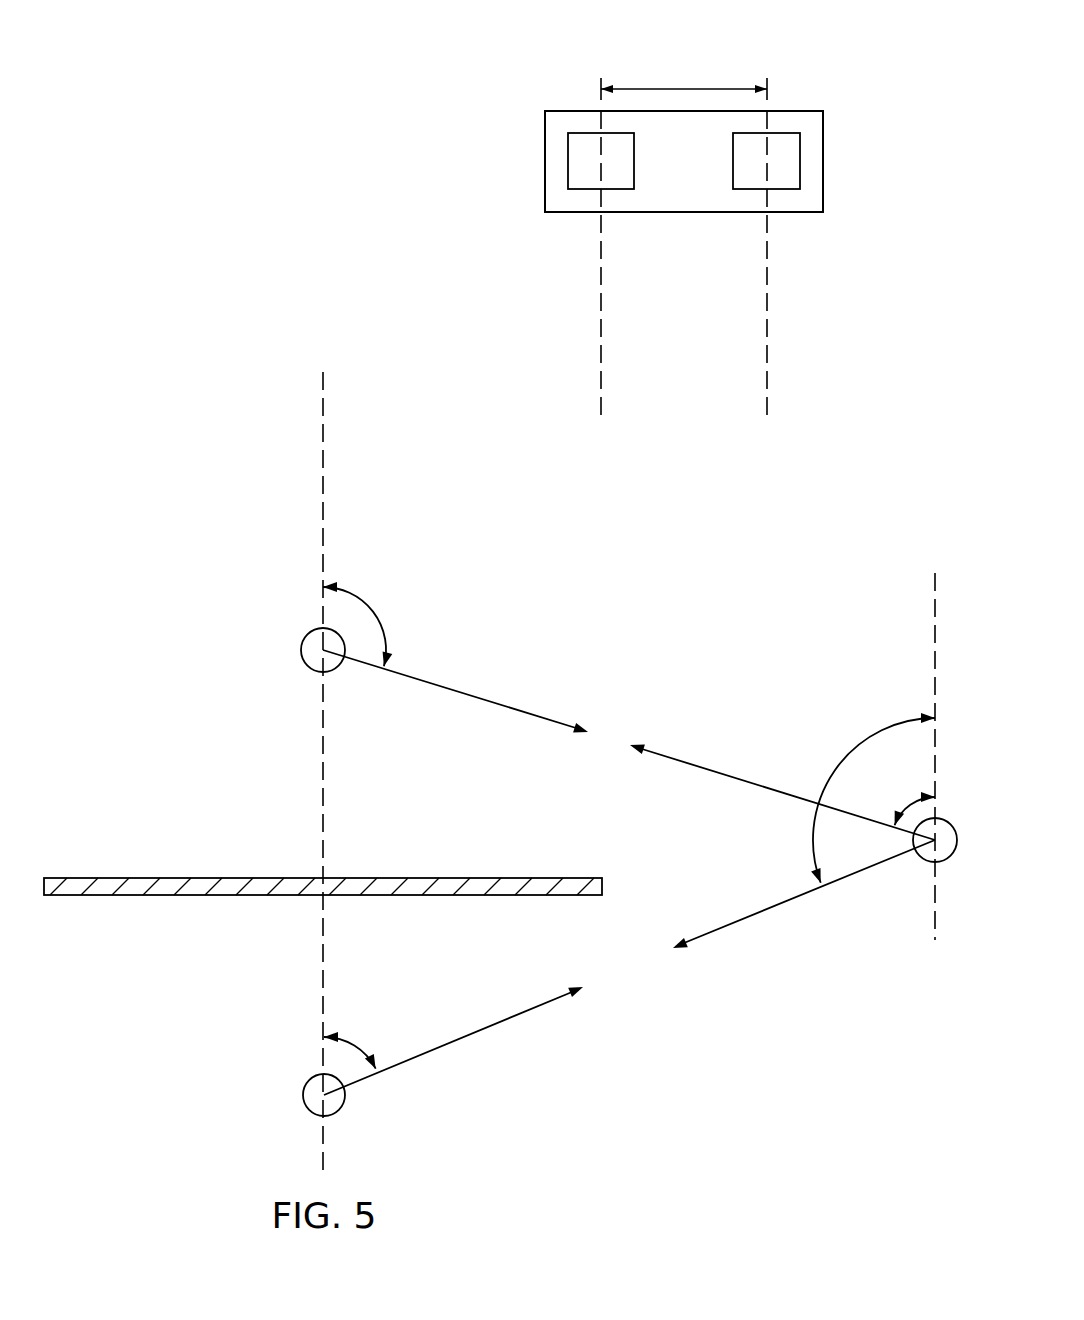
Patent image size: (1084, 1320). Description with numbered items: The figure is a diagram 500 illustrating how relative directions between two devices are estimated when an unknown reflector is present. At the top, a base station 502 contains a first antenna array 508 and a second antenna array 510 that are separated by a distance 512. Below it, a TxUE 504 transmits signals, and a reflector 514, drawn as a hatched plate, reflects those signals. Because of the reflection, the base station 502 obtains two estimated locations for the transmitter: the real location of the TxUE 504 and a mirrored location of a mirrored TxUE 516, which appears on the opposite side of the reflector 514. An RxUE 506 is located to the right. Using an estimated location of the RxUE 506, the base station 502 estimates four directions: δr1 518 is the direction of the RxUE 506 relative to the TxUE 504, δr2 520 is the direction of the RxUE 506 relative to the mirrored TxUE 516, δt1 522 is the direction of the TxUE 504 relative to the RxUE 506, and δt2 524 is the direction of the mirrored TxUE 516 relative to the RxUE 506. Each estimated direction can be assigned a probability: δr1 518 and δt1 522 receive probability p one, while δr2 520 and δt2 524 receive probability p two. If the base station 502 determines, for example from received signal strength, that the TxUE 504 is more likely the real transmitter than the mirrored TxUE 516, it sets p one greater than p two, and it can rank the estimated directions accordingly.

The diagram 500 is at (250, 62).
The base station 502 is at (838, 156).
The TxUE 504 is at (301, 650).
The RxUE 506 is at (922, 858).
The first antenna array 508 is at (608, 189).
The second antenna array 510 is at (790, 174).
The distance 512 is at (686, 88).
The reflector 514 is at (193, 897).
The mirrored TxUE 516 is at (303, 1095).
The δr1 518 is at (378, 612).
The δr2 520 is at (358, 1044).
The δt1 522 is at (908, 804).
The δt2 524 is at (866, 736).